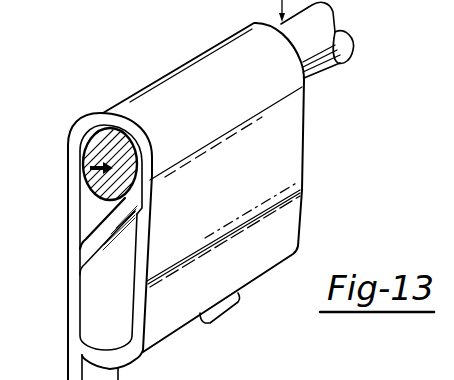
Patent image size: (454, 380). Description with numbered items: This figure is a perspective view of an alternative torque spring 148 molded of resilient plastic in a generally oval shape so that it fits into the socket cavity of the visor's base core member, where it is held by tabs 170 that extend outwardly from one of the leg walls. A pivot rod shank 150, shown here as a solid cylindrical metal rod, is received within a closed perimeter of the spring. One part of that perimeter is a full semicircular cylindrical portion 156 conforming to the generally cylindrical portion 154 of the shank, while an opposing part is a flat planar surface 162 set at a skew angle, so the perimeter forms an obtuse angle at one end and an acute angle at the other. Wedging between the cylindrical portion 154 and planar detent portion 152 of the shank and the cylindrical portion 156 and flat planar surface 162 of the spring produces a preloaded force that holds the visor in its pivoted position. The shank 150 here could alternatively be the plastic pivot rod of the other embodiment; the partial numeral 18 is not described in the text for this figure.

The torque spring 148 is at (138, 84).
The cylindrical portion 156 is at (104, 112).
The planar detent portion 152 is at (124, 132).
The pivot rod shank 150 is at (87, 168).
The cylindrical portion 154 is at (101, 197).
The flat planar surface 162 is at (102, 246).
The tabs 170 is at (218, 321).
The end fitting 18 is at (331, 39).